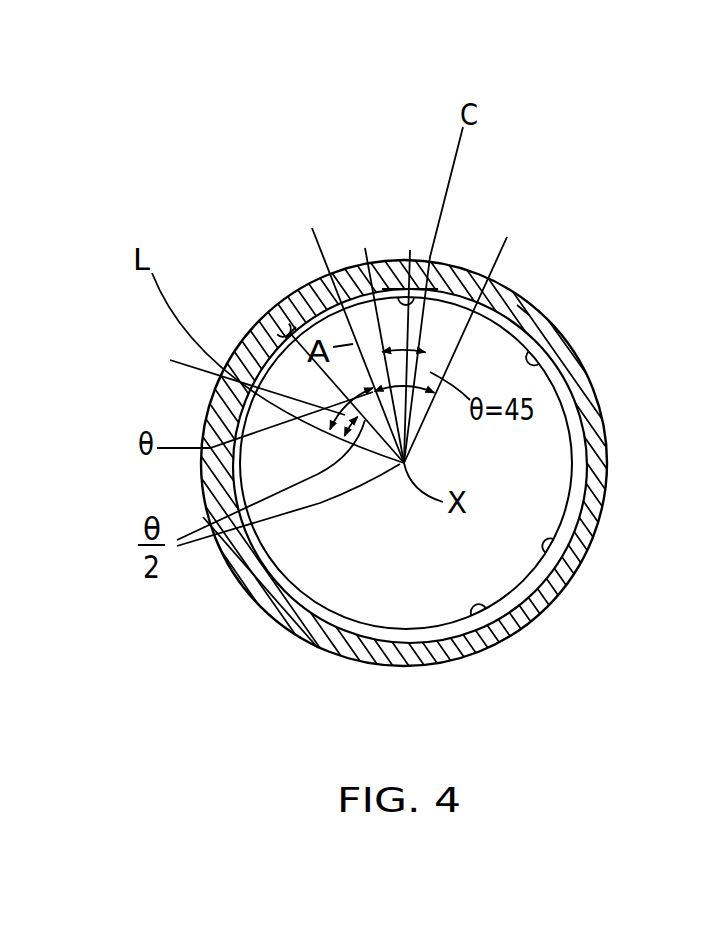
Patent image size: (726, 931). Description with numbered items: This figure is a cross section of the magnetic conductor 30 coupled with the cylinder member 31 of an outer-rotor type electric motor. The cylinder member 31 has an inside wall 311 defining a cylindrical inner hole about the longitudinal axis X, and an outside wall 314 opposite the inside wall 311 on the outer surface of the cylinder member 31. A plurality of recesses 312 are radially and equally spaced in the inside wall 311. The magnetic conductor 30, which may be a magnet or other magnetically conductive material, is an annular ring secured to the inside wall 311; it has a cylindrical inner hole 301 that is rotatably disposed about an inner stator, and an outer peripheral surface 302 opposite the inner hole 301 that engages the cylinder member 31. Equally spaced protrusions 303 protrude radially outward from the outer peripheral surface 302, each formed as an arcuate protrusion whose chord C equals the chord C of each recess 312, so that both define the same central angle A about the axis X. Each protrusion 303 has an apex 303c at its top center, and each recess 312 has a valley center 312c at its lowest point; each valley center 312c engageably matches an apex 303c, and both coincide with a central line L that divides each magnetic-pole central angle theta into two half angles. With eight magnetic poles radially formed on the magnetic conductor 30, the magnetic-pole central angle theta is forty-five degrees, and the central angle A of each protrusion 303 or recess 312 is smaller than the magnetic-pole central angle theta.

The magnetic conductor 30 is at (567, 343).
The inner hole 301 is at (575, 550).
The outer peripheral surface 302 is at (502, 637).
The protrusion 303 is at (414, 262).
The recess 312 is at (401, 283).
The valley center 312c is at (279, 316).
The apex 303c is at (298, 330).
The cylinder member 31 is at (238, 331).
The inside wall 311 is at (330, 430).
The outside wall 314 is at (263, 610).